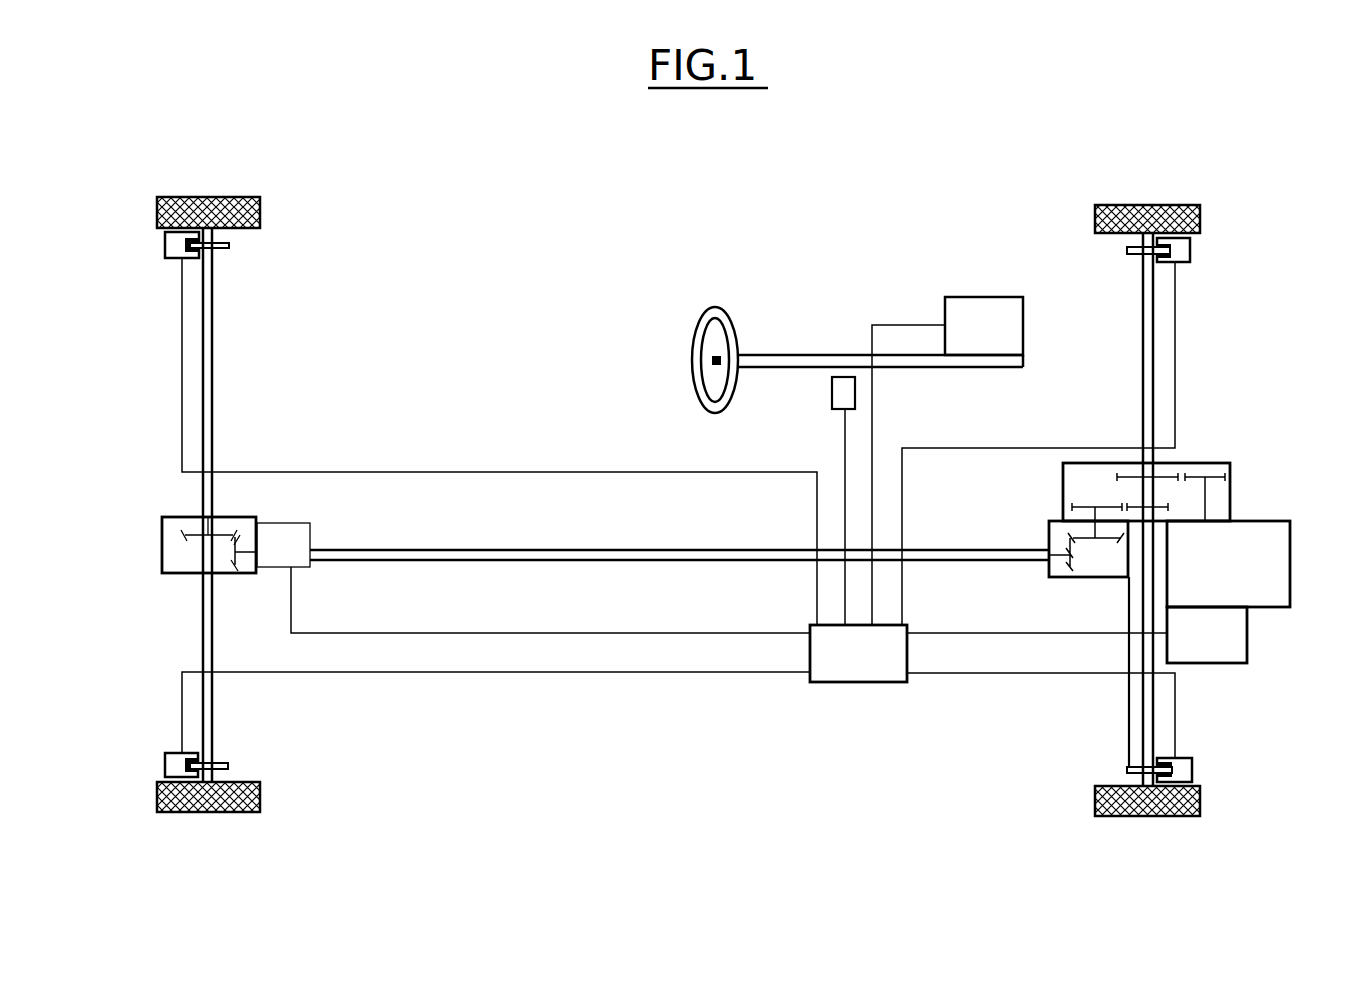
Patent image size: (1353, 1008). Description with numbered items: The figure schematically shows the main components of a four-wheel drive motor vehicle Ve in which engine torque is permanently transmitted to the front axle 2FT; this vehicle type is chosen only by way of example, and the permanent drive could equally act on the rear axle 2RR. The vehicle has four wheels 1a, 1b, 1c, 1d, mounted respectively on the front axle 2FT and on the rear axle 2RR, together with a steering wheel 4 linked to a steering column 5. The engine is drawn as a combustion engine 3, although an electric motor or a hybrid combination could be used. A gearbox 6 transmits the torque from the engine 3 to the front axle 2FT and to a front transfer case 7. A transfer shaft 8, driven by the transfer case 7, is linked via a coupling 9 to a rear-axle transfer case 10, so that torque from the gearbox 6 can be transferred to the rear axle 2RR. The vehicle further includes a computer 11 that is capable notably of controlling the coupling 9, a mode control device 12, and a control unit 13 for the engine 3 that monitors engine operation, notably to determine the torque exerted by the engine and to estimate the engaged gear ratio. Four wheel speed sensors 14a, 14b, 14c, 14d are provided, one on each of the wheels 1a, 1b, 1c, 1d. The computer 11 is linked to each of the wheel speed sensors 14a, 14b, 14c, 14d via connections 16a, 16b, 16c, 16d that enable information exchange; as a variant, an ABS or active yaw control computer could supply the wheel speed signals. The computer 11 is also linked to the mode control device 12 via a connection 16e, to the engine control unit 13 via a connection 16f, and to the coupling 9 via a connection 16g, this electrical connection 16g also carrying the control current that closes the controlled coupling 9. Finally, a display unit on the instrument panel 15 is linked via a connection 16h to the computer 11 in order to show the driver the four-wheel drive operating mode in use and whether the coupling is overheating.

The four-wheel drive motor vehicle Ve is at (372, 178).
The wheel 1a is at (1200, 219).
The wheel 1b is at (1200, 802).
The wheel 1c is at (157, 214).
The wheel 1d is at (157, 797).
The front axle 2FT is at (1143, 359).
The rear axle 2RR is at (213, 384).
The combustion engine 3 is at (1290, 566).
The steering wheel 4 is at (714, 307).
The steering column 5 is at (838, 354).
The gearbox 6 is at (1230, 492).
The front transfer case 7 is at (1090, 578).
The transfer shaft 8 is at (500, 549).
The coupling 9 is at (289, 523).
The rear-axle transfer case 10 is at (162, 547).
The computer 11 is at (858, 682).
The mode control device 12 is at (985, 297).
The control unit 13 is at (1247, 638).
The wheel speed sensor 14a is at (1190, 251).
The wheel speed sensor 14b is at (1192, 771).
The wheel speed sensor 14c is at (165, 247).
The wheel speed sensor 14d is at (165, 766).
The display unit on the instrument panel 15 is at (832, 394).
The connection 16a is at (1038, 447).
The connection 16b is at (997, 674).
The connection 16c is at (500, 471).
The connection 16d is at (500, 673).
The connection 16e is at (908, 324).
The connection 16f is at (997, 632).
The connection 16g is at (500, 632).
The connection 16h is at (845, 441).